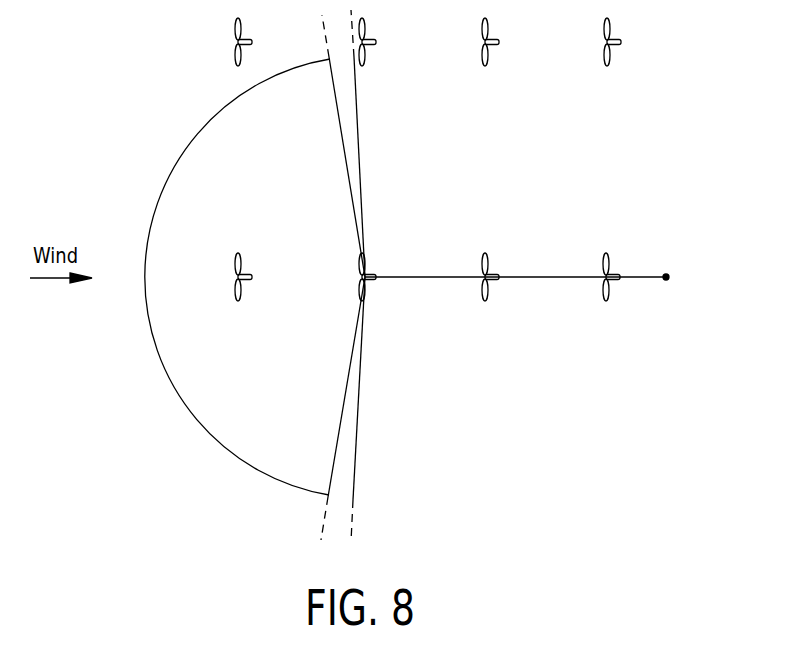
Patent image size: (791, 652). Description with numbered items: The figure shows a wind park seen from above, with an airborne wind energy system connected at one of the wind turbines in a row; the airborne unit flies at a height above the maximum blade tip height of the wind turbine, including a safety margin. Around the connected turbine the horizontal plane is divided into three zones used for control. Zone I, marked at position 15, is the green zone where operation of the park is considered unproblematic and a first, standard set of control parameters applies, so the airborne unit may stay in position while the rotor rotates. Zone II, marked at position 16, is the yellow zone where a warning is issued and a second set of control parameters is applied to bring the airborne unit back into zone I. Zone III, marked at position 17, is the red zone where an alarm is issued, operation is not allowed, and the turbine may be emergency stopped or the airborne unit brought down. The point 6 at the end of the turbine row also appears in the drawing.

The end point of wind turbine row 6 is at (666, 281).
The zone I position 15 is at (475, 230).
The zone II position 16 is at (358, 428).
The zone III position 17 is at (207, 125).
The zone I is at (575, 276).
The zone II is at (343, 80).
The zone III is at (210, 221).